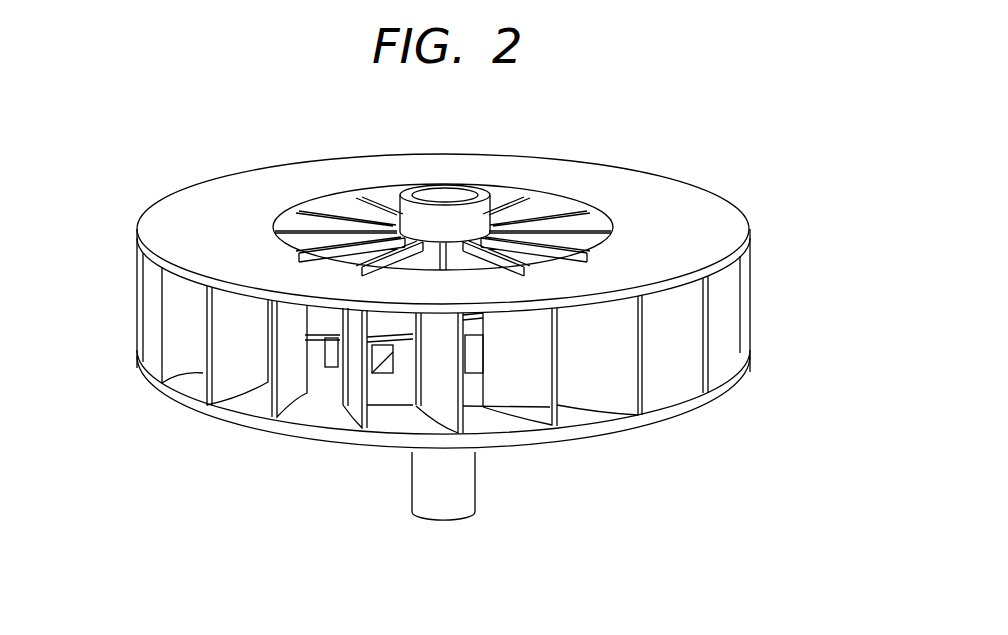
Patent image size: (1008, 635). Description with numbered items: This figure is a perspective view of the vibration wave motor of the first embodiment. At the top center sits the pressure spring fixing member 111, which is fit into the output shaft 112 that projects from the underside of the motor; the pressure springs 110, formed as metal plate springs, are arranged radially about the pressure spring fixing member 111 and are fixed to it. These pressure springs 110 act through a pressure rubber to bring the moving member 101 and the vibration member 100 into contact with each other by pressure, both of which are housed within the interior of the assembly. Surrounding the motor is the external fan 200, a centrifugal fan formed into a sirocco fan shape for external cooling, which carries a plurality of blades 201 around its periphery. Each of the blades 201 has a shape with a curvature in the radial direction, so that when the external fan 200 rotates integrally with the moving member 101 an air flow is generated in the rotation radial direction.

The vibration member 100 is at (387, 387).
The moving member 101 is at (327, 318).
The pressure springs 110 is at (563, 207).
The pressure spring fixing member 111 is at (462, 215).
The output shaft 112 is at (455, 502).
The external fan 200 is at (778, 215).
The blades 201 is at (680, 373).